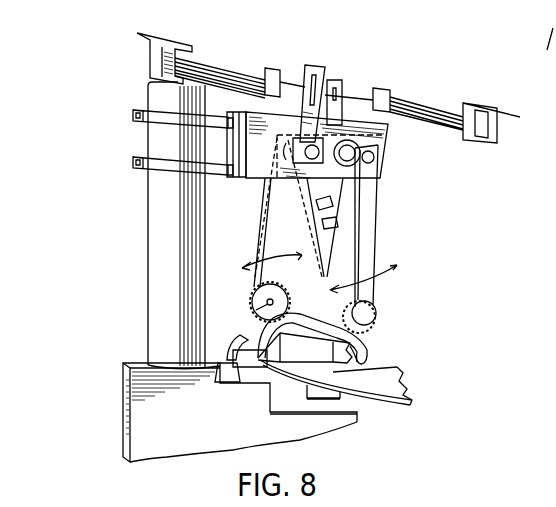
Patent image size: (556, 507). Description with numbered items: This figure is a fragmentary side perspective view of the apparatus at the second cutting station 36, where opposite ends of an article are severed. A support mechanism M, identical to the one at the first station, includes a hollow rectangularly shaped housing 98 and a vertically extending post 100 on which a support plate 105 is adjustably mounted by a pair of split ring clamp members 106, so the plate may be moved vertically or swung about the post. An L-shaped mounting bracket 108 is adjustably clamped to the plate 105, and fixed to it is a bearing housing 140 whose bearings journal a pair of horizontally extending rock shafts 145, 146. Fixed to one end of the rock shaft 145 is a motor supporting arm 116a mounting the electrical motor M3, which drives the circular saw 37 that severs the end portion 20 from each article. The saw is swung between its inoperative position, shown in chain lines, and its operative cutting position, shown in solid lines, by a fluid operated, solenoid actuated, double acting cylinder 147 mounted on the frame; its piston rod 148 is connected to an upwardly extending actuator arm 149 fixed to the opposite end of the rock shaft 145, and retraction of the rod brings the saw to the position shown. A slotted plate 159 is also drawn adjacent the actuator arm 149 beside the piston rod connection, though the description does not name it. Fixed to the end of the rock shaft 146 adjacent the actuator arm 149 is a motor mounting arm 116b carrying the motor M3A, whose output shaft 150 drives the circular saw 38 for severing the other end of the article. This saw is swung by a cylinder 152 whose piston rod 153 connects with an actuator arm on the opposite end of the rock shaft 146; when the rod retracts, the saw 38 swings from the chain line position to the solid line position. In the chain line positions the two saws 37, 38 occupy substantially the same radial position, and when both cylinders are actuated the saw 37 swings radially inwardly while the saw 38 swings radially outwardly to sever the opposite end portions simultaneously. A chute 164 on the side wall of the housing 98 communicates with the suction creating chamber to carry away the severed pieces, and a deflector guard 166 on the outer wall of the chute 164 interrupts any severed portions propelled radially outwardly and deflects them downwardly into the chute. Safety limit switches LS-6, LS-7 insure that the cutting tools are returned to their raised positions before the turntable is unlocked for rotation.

The vertical post 100 is at (152, 222).
The split ring clamp members 106 is at (167, 116).
The support plate 105 is at (240, 113).
The L-shaped mounting bracket 108 is at (243, 178).
The bearing housing 140 is at (384, 131).
The rock shaft 145 is at (374, 157).
The rock shaft 146 is at (305, 145).
The double acting cylinder 147 is at (226, 64).
The piston rod 148 is at (290, 80).
The slotted plate 159 is at (314, 66).
The actuator arm 149 is at (333, 80).
The piston rod 153 is at (353, 95).
The cylinder 152 is at (421, 108).
The motor supporting arm 116a is at (374, 243).
The motor mounting arm 116b is at (277, 213).
The safety limit switch LS-7 is at (333, 205).
The safety limit switch LS-6 is at (338, 224).
The motor M3A is at (255, 288).
The output shaft 150 is at (252, 312).
The circular saw 38 is at (284, 299).
The electrical motor M3 is at (370, 310).
The circular saw 37 is at (366, 338).
The end portion 20 is at (366, 352).
The deflector guard 166 is at (230, 347).
The chute 164 is at (255, 370).
The hollow rectangularly shaped housing 98 is at (128, 412).
The cutting station 36 is at (91, 301).
The support mechanism M is at (108, 441).